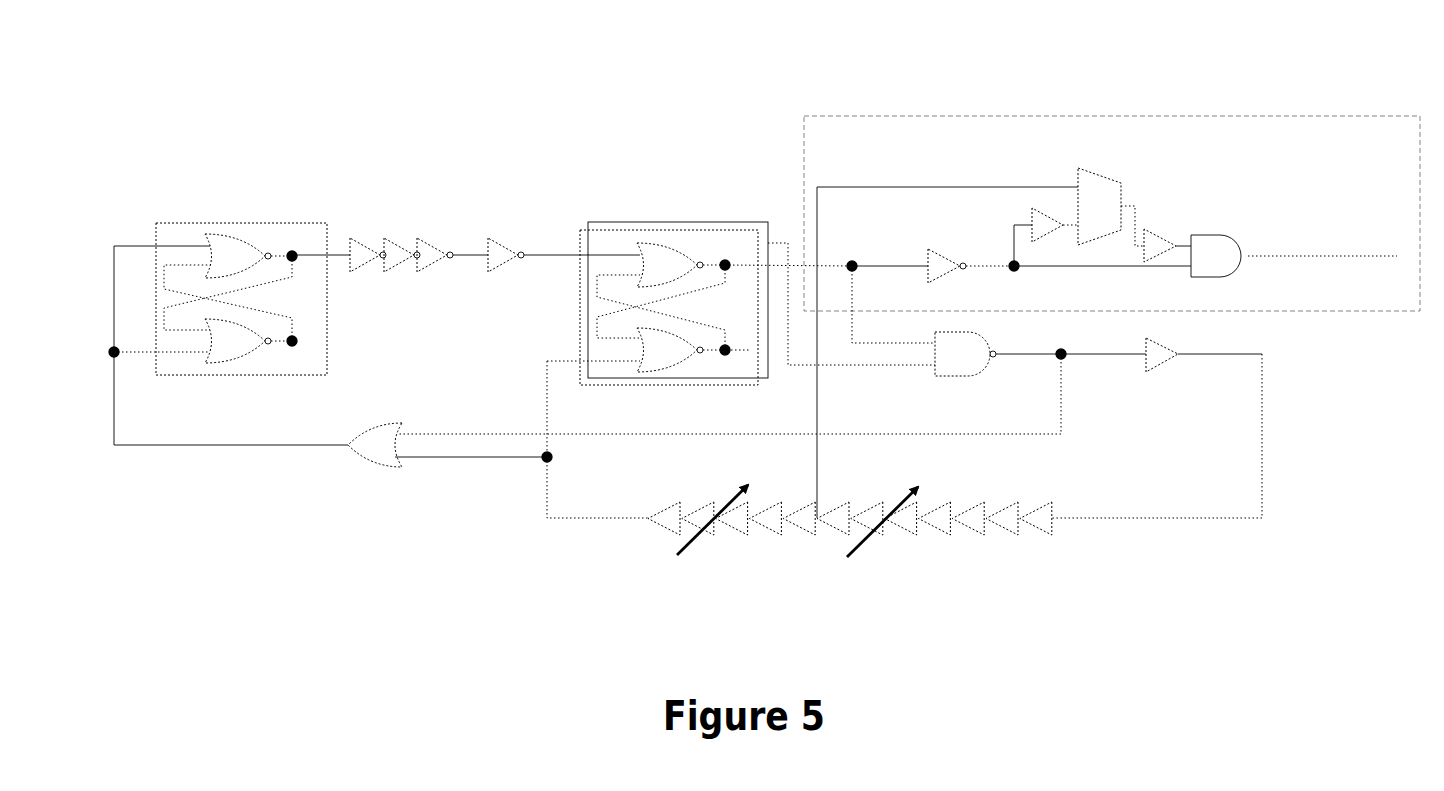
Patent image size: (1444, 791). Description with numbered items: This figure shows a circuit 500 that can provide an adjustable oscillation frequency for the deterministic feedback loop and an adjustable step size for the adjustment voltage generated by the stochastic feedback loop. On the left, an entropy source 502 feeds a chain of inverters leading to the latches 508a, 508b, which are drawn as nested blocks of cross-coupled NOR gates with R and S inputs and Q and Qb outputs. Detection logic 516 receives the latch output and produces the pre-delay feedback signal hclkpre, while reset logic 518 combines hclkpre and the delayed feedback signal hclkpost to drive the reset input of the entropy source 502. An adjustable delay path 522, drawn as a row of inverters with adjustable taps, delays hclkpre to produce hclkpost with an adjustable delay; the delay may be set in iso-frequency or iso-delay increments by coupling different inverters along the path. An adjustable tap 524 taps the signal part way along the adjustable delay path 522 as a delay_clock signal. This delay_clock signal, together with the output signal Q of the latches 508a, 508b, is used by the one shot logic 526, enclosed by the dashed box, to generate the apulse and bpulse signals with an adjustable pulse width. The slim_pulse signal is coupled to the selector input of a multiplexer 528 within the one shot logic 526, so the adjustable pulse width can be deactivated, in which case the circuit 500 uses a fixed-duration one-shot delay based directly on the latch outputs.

The circuit 500 is at (214, 143).
The entropy source 502 is at (172, 224).
The latch 508a is at (590, 235).
The latch 508b is at (683, 222).
The detection logic 516 is at (955, 368).
The reset logic 518 is at (385, 460).
The adjustable delay path 522 is at (940, 528).
The adjustable tap 524 is at (818, 460).
The one shot logic 526 is at (908, 116).
The multiplexer 528 is at (1115, 197).